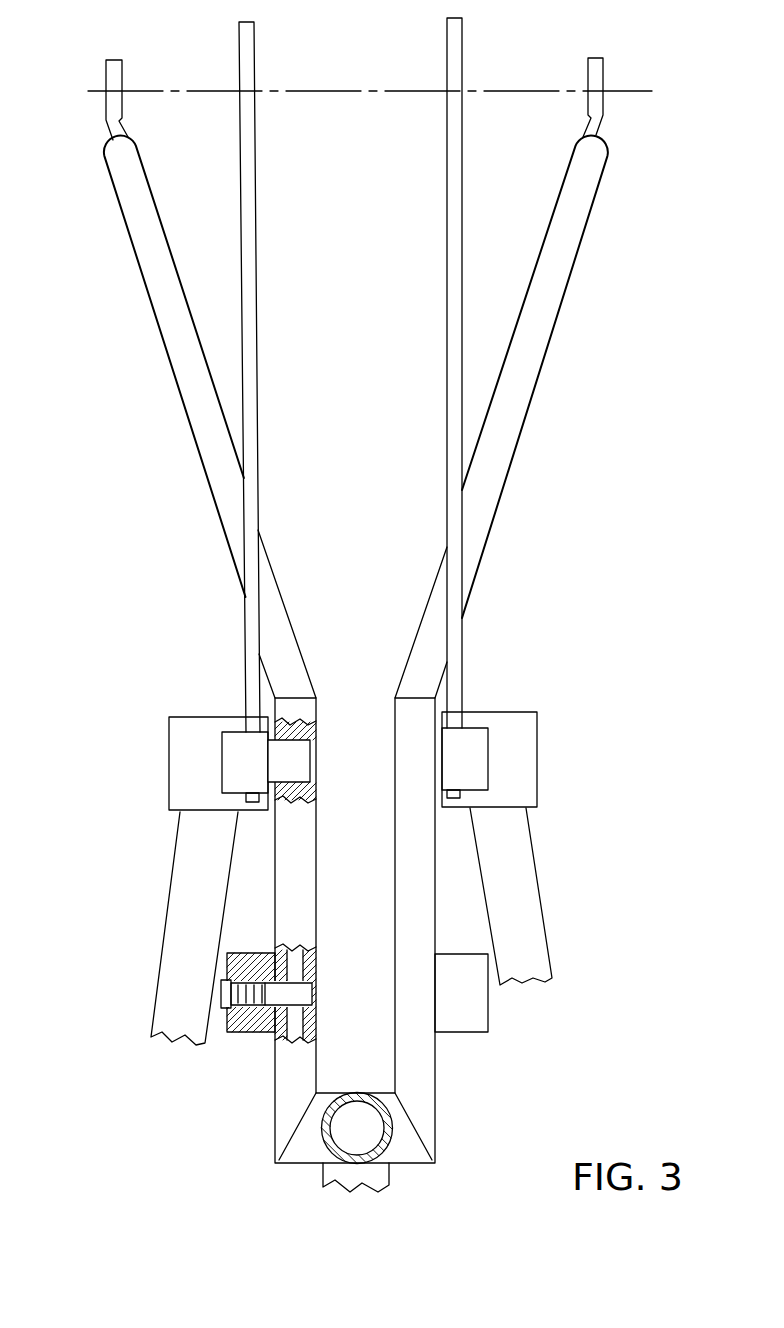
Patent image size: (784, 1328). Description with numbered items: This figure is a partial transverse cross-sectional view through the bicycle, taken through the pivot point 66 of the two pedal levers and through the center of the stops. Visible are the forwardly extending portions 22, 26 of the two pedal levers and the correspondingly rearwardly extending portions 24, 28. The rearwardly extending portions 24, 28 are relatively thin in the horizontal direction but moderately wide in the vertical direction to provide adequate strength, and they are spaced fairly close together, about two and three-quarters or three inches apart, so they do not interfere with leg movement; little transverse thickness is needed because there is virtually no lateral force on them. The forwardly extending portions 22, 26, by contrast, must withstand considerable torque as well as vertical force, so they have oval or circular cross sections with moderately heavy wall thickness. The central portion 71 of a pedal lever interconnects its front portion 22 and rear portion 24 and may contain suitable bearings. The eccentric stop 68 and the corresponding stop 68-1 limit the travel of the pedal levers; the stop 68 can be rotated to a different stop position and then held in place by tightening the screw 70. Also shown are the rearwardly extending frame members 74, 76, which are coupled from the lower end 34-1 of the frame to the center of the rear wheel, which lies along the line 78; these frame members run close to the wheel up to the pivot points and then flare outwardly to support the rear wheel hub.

The front portion of pedal lever 22 is at (185, 967).
The rear portion of pedal lever 24 is at (246, 58).
The front portion of pedal lever 26 is at (516, 890).
The rear portion of pedal lever 28 is at (458, 41).
The lower end of frame 34-1 is at (375, 1118).
The pivot point 66 is at (295, 765).
The stop 68 is at (253, 1032).
The stop 68-1 is at (473, 1020).
The screw 70 is at (227, 1007).
The central portion of pedal lever 71 is at (213, 727).
The rearwardly extending frame member 74 is at (568, 249).
The rearwardly extending frame member 76 is at (153, 255).
The line 78 is at (307, 91).